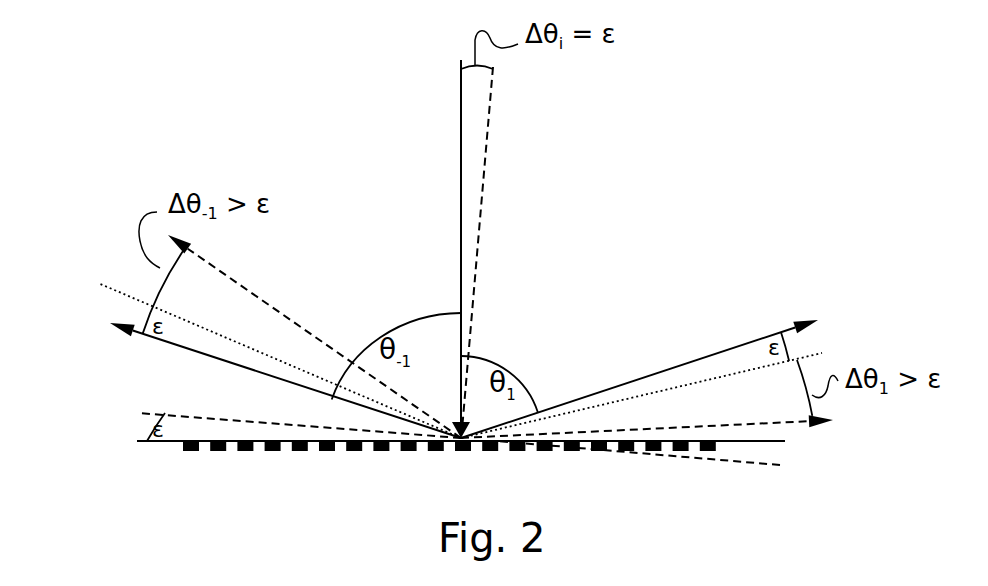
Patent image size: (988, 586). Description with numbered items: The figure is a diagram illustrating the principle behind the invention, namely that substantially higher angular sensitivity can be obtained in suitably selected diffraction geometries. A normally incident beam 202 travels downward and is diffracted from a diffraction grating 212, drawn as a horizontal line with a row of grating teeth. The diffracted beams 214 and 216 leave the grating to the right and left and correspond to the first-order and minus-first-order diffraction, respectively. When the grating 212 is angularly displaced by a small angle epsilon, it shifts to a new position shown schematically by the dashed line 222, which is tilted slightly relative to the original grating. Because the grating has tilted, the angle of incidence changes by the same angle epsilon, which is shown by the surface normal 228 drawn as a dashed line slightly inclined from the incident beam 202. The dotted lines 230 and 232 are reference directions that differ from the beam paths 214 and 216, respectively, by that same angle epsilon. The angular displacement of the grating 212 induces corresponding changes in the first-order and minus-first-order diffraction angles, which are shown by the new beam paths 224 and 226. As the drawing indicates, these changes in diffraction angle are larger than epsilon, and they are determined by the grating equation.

The normally incident beam 202 is at (460, 163).
The diffraction grating 212 is at (233, 443).
The diffracted beam 214 is at (693, 361).
The diffracted beam 216 is at (147, 336).
The dashed line 222 is at (165, 413).
The beam path 224 is at (797, 422).
The beam path 226 is at (254, 294).
The surface normal 228 is at (479, 231).
The dotted line 230 is at (752, 368).
The dotted line 232 is at (123, 290).